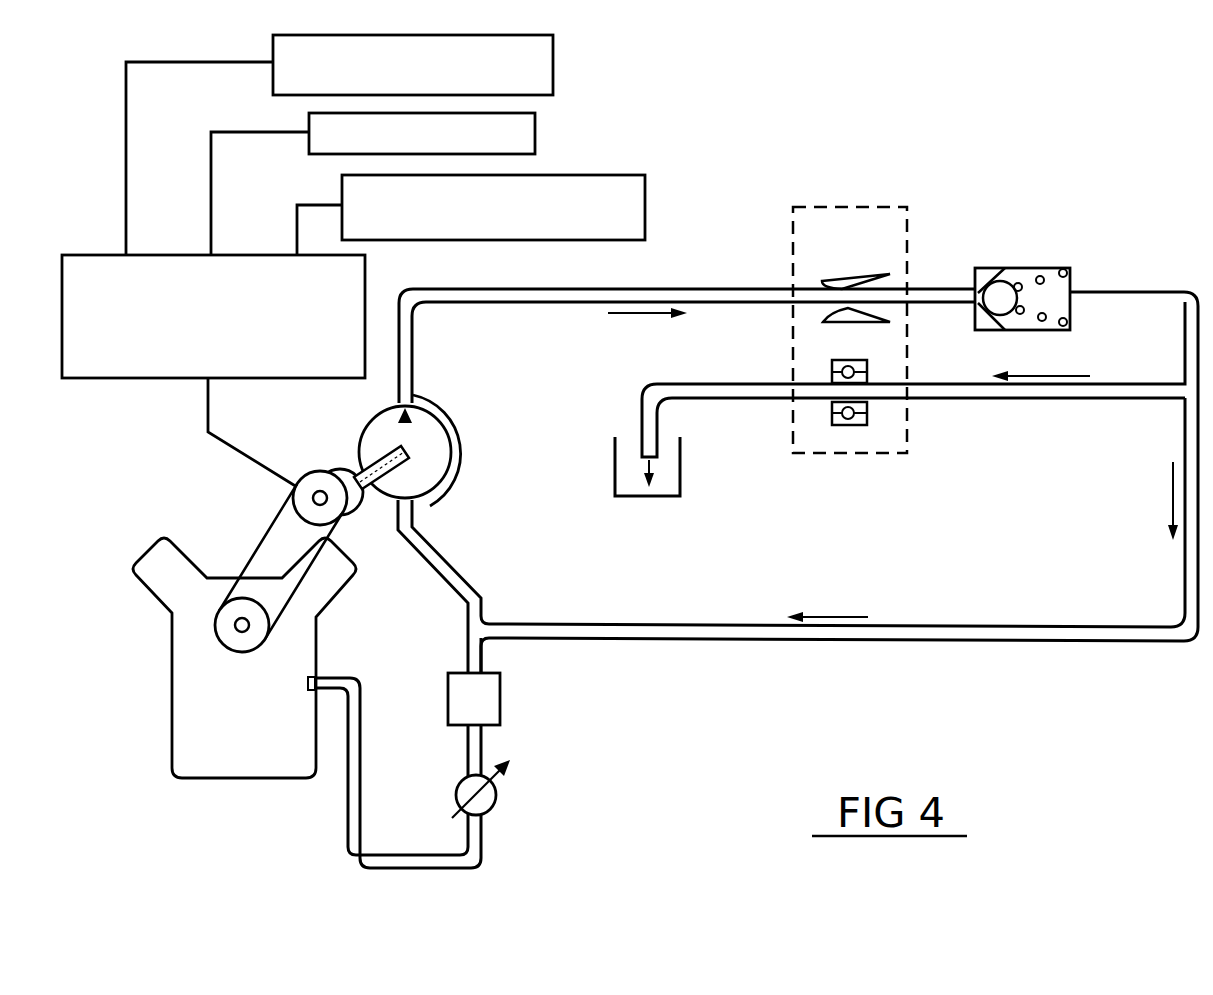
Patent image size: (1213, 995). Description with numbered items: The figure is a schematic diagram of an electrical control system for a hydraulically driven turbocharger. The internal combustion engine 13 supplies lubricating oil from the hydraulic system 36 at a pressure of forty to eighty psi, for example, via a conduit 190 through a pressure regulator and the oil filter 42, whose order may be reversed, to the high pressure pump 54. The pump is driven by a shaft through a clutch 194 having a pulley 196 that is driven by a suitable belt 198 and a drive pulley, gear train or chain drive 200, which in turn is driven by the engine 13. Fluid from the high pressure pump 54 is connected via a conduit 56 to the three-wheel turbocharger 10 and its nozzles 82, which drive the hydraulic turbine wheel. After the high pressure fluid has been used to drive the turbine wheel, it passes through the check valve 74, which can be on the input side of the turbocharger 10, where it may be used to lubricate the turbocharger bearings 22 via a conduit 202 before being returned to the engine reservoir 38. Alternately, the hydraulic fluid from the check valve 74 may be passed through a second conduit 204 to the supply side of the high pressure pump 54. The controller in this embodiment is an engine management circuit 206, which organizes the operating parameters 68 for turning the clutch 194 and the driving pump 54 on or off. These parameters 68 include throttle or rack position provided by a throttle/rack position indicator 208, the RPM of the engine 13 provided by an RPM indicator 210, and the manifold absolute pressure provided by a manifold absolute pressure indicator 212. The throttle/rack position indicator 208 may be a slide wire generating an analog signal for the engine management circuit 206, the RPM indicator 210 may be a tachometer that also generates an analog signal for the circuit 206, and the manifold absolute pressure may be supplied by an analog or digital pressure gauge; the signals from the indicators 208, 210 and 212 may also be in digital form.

The three-wheel turbocharger 10 is at (872, 207).
The internal combustion engine 13 is at (172, 678).
The turbocharger bearings 22 is at (857, 425).
The hydraulic system 36 is at (212, 773).
The engine reservoir 38 is at (660, 497).
The oil filter 42 is at (500, 693).
The high pressure pump 54 is at (455, 443).
The conduit 56 is at (412, 348).
The operating parameters 68 is at (297, 223).
The check valve 74 is at (1050, 268).
The nozzles 82 is at (867, 272).
The conduit 190 is at (345, 802).
The clutch 194 is at (353, 503).
The pulley 196 is at (294, 498).
The belt 198 is at (263, 540).
The drive pulley, gear train or chain drive 200 is at (242, 642).
The conduit 202 is at (1112, 384).
The second conduit 204 is at (1187, 562).
The engine management circuit 206 is at (120, 365).
The throttle/rack position indicator 208 is at (553, 58).
The RPM indicator 210 is at (535, 135).
The manifold absolute pressure indicator 212 is at (645, 198).